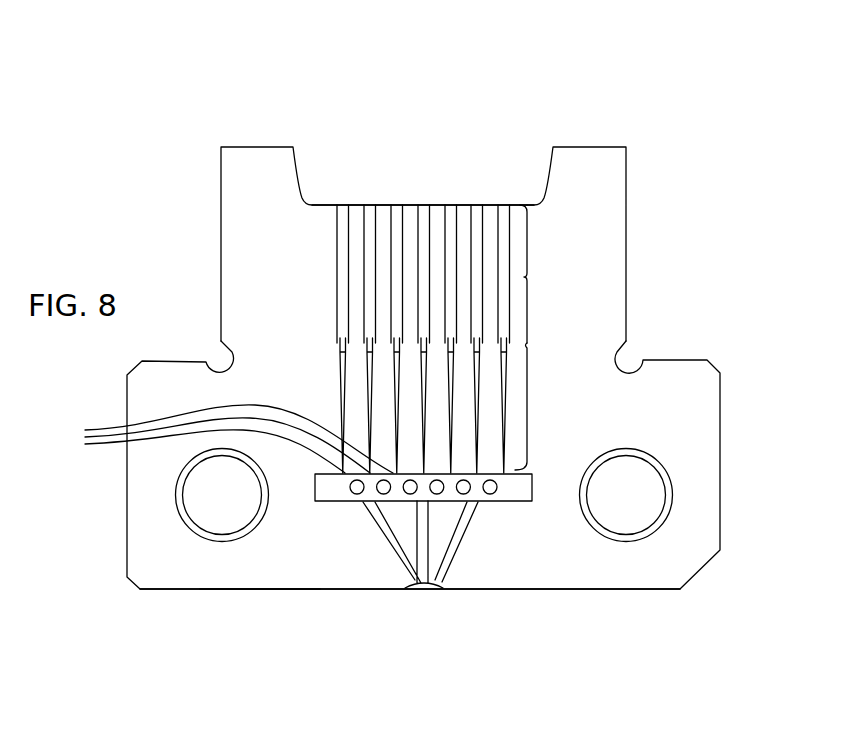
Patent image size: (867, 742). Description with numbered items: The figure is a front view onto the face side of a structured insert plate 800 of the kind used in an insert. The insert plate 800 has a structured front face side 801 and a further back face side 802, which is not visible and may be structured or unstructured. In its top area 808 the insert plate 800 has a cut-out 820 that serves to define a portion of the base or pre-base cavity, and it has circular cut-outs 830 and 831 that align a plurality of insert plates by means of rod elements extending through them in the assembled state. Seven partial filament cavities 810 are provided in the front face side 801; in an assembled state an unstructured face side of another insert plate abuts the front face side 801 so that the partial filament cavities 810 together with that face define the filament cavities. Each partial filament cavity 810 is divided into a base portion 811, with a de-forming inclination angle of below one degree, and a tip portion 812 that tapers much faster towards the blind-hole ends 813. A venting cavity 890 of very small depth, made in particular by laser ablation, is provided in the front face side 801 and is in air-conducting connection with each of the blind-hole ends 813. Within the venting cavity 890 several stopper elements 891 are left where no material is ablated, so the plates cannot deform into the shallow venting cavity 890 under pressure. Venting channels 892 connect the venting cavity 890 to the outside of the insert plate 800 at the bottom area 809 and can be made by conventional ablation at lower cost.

The insert plate 800 is at (399, 88).
The top area 808 is at (252, 132).
The cut-out 820 is at (508, 153).
The partial filament cavities 810 is at (396, 205).
The base portion 811 is at (527, 277).
The tip portion 812 is at (527, 410).
The back face side 802 is at (668, 422).
The front face side 801 is at (595, 557).
The bottom area 809 is at (259, 602).
The blind-hole ends 813 is at (216, 439).
The circular cut-out 831 is at (221, 505).
The circular cut-out 830 is at (628, 503).
The venting cavity 890 is at (515, 487).
The stopper elements 891 is at (355, 495).
The venting channels 892 is at (412, 588).